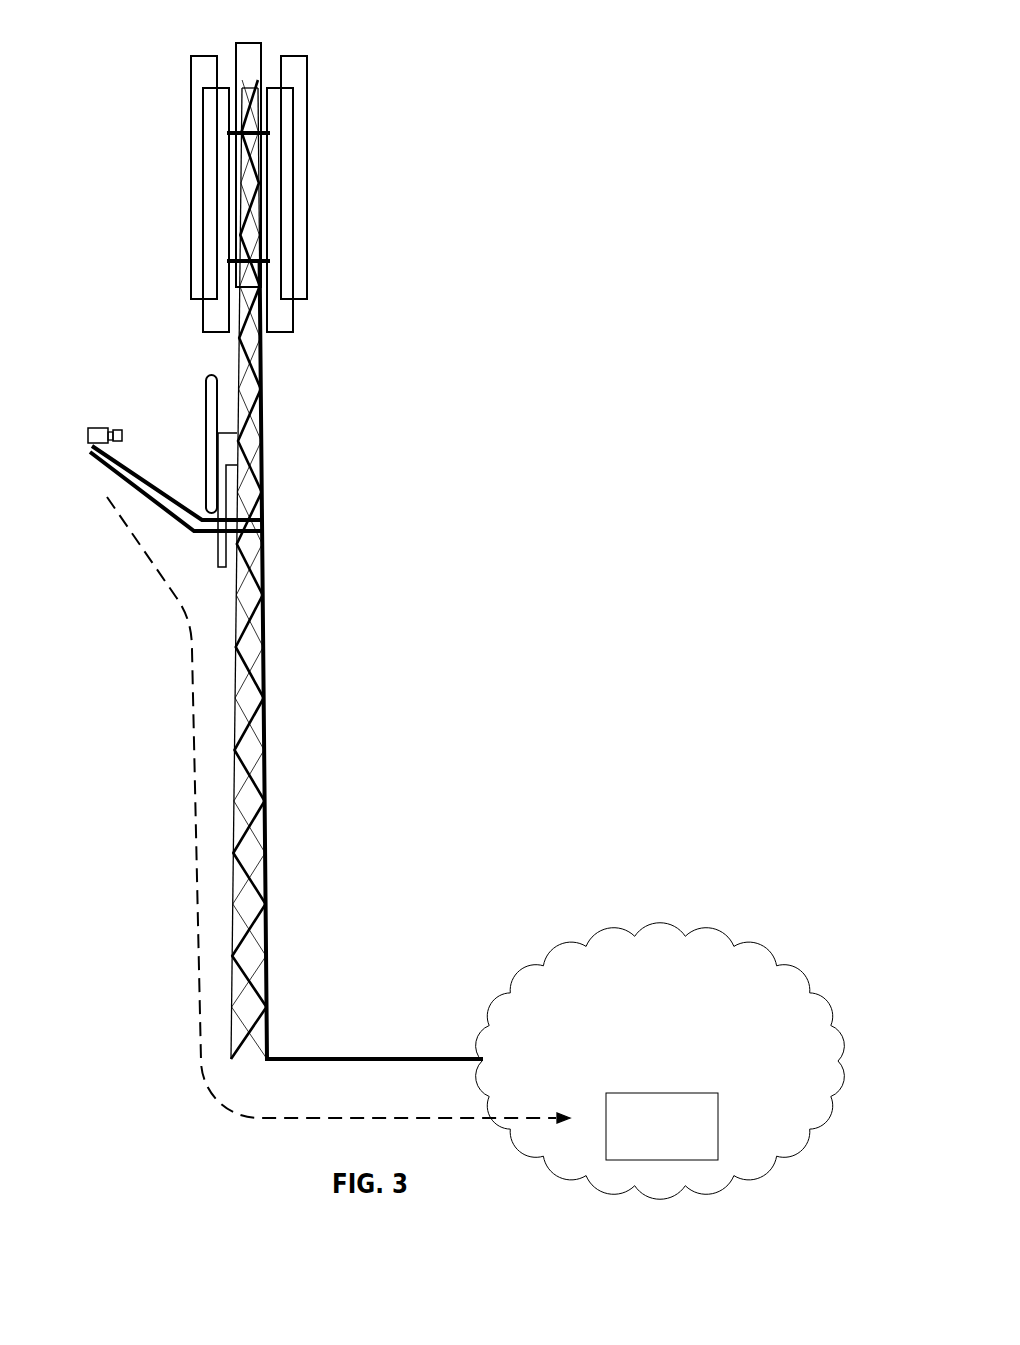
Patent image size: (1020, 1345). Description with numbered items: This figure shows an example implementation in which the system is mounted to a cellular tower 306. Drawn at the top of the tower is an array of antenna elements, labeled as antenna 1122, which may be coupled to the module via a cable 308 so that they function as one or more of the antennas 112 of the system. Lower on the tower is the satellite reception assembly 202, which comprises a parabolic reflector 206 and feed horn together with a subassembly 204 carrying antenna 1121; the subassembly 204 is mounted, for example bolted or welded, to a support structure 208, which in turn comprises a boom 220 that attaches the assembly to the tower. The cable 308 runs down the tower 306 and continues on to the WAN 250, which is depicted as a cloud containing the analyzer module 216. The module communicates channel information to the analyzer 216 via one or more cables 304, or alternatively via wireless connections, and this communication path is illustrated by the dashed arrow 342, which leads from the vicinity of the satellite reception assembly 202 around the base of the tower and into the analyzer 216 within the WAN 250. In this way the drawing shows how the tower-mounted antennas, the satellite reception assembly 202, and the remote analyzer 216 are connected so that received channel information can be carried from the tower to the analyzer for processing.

The cellular tower 306 is at (254, 172).
The antennas 112 is at (276, 187).
The antenna 1122 is at (307, 85).
The antenna 1121 is at (122, 434).
The satellite reception assembly 202 is at (152, 457).
The subassembly 204 is at (88, 438).
The parabolic reflector 206 is at (206, 399).
The support structure 208 is at (218, 557).
The boom 220 is at (143, 478).
The cable 308 is at (264, 427).
The cables 304 is at (264, 612).
The arrow 342 is at (192, 860).
The WAN 250 is at (660, 1061).
The analyzer module 216 is at (662, 1126).